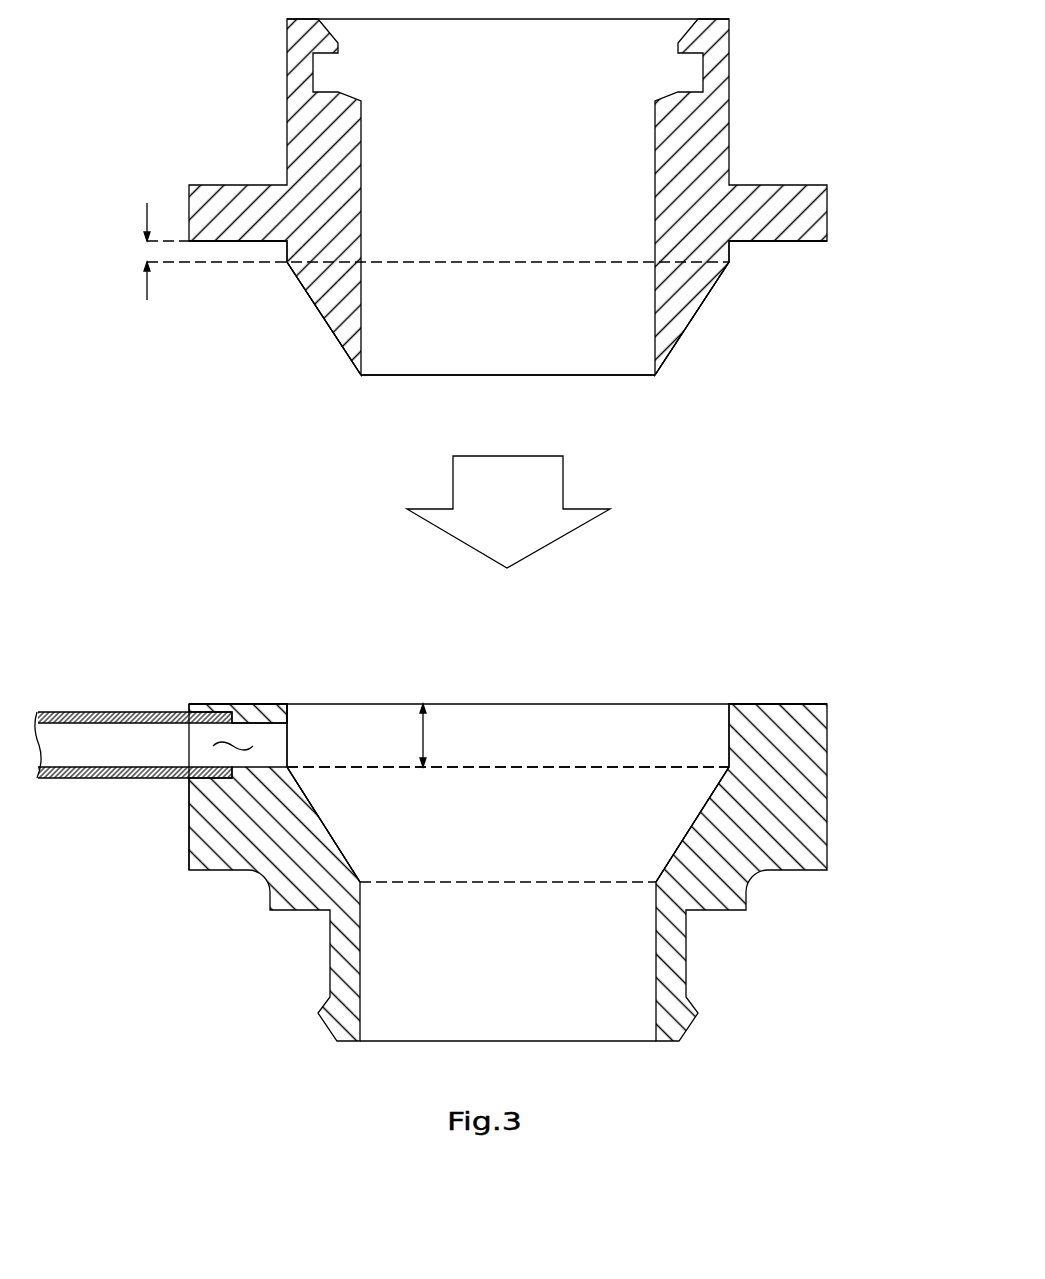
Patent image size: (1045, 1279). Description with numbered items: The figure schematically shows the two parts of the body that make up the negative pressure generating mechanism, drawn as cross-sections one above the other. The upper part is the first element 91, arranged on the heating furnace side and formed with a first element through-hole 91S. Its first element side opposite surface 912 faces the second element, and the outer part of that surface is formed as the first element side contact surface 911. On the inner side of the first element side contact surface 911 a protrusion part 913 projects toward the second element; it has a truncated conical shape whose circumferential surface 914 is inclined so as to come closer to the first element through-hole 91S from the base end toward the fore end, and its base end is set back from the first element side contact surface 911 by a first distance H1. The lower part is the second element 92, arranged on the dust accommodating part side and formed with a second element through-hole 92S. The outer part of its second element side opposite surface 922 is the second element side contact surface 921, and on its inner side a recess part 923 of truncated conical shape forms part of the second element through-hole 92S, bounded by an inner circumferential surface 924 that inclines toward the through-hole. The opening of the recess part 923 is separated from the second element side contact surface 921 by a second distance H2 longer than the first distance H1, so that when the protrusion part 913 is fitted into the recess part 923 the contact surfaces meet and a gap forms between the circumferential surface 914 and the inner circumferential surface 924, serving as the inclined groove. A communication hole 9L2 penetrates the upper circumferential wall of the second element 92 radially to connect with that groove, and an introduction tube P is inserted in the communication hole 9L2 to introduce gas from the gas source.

The first element 91 is at (827, 213).
The first element side contact surface 911 is at (230, 241).
The first element side opposite surface 912 is at (293, 392).
The protrusion part 913 is at (333, 355).
The circumferential surface 914 is at (315, 303).
The first element through-hole 91S is at (531, 151).
The first distance H1 is at (124, 251).
The second element 92 is at (827, 787).
The second element side contact surface 921 is at (238, 704).
The second element side opposite surface 922 is at (346, 623).
The recess part 923 is at (561, 767).
The inner circumferential surface 924 is at (326, 803).
The second element through-hole 92S is at (531, 987).
The communication hole 9L2 is at (243, 750).
The introduction tube P is at (68, 712).
The second distance H2 is at (445, 735).